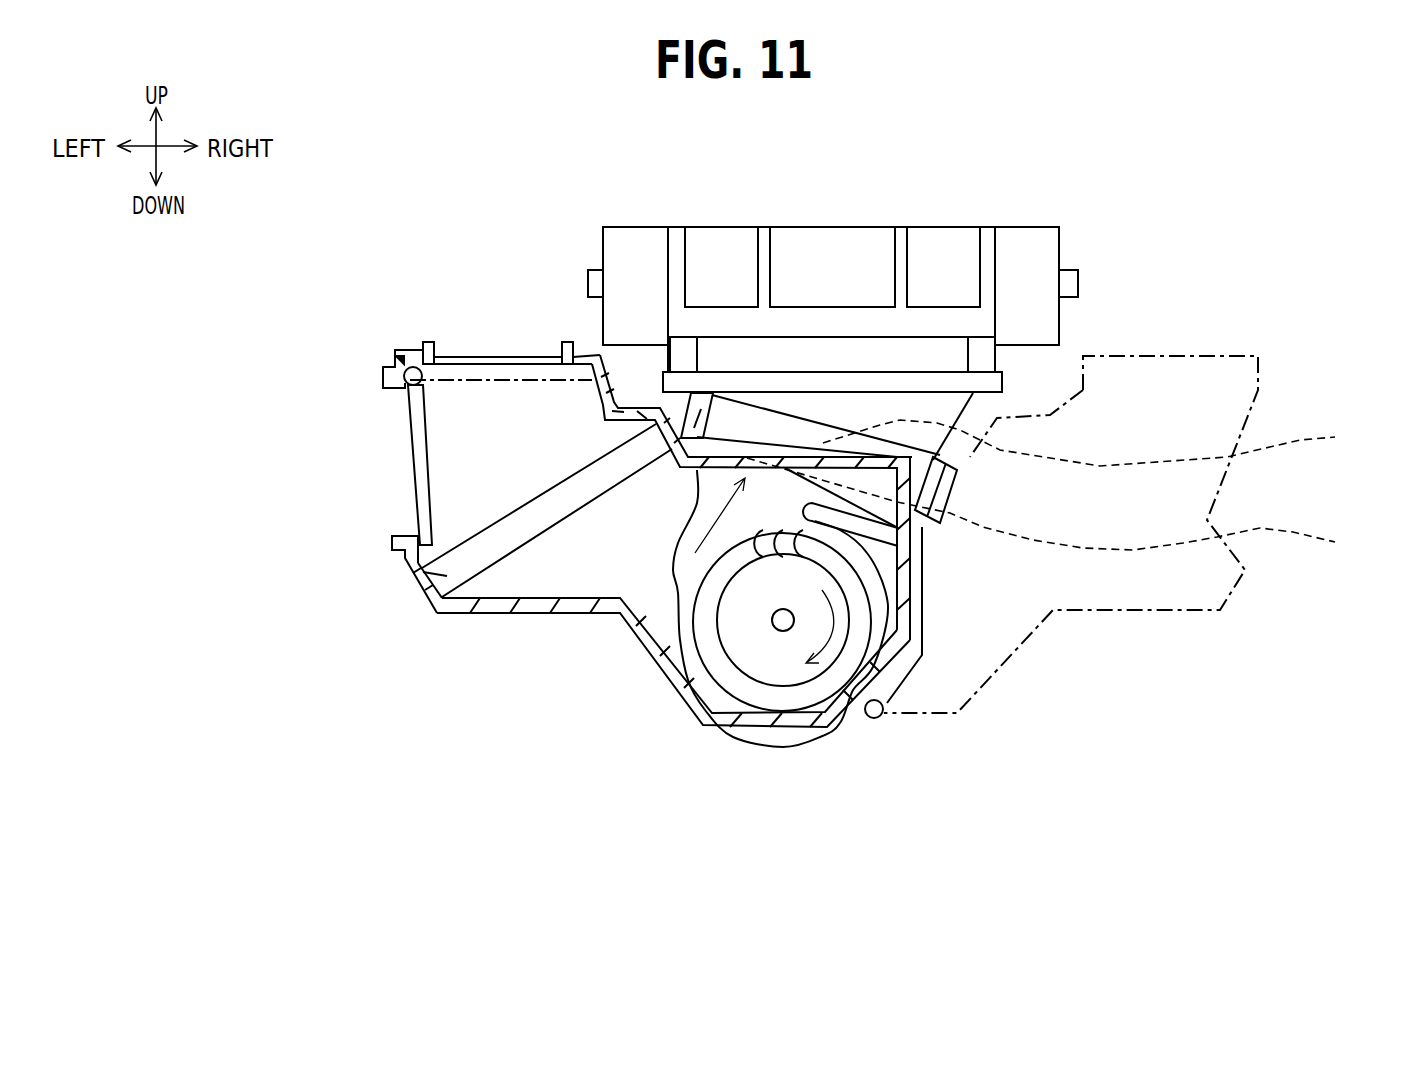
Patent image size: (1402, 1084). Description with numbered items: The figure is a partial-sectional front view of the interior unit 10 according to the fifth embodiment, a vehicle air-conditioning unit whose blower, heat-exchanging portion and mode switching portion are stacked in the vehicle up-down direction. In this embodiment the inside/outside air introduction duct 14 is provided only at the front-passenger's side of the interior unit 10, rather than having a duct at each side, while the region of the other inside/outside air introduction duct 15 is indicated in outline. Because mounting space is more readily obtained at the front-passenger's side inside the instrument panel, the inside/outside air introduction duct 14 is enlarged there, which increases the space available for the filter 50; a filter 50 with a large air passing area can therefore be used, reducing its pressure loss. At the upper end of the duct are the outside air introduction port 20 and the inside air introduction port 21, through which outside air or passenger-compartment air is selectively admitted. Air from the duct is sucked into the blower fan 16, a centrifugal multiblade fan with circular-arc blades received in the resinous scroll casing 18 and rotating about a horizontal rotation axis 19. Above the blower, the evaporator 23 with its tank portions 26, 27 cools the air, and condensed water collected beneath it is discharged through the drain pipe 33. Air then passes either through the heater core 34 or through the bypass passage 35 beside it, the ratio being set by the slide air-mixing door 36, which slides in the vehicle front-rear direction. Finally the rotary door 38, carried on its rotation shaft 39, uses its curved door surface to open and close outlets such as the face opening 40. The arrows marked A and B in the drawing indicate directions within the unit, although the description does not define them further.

The interior unit 10 is at (507, 225).
The inside/outside air introduction duct 14 is at (526, 615).
The inside/outside air introduction duct 15 is at (1133, 612).
The blower fan 16 is at (728, 680).
The scroll casing 18 is at (740, 733).
The rotation axis 19 is at (783, 627).
The outside air introduction port 20 is at (496, 365).
The inside air introduction port 21 is at (412, 460).
The evaporator 23 is at (1094, 443).
The tank portion 26 is at (1056, 510).
The tank portion 27 is at (693, 412).
The drain pipe 33 is at (913, 648).
The heater core 34 is at (743, 342).
The bypass passage 35 is at (743, 342).
The slide air-mixing door 36 is at (832, 380).
The rotary door 38 is at (629, 233).
The rotation shaft 39 is at (597, 267).
The face opening 40 is at (945, 233).
The filter 50 is at (425, 597).
The air flow direction A is at (846, 658).
The air flow direction B is at (690, 537).